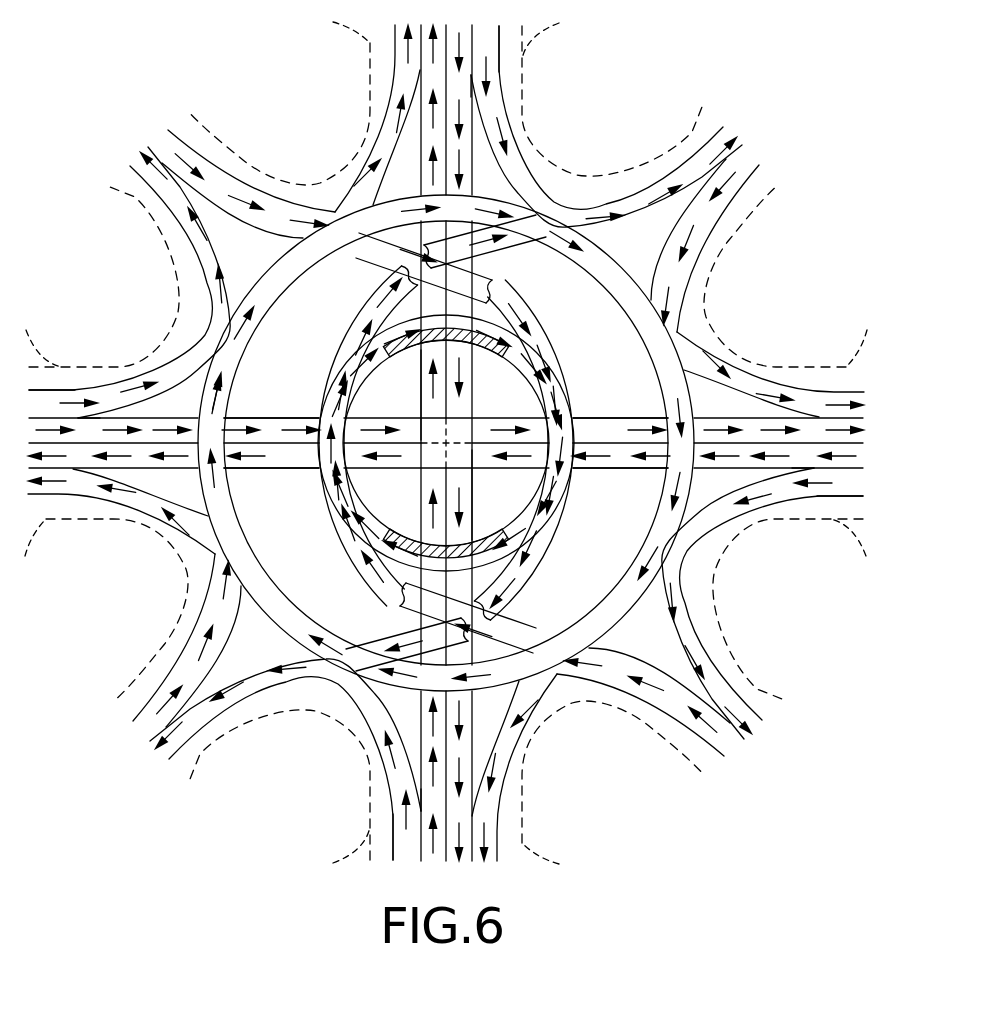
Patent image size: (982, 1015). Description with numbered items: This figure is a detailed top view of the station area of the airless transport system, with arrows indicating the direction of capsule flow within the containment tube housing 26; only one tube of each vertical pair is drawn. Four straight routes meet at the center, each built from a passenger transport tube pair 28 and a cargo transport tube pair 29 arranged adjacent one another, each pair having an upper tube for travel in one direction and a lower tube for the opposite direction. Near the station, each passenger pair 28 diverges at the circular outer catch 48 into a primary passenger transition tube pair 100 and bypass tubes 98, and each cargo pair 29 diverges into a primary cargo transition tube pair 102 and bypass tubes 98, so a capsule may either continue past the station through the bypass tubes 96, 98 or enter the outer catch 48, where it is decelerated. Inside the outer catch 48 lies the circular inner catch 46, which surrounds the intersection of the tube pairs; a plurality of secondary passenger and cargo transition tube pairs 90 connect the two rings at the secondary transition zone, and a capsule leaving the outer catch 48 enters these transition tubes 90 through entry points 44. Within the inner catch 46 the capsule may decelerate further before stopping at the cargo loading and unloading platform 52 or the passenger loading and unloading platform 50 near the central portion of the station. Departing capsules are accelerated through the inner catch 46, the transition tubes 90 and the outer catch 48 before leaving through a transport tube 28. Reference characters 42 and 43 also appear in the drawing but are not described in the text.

The containment tube housing 26 is at (445, 442).
The passenger transport tube pair 28 is at (128, 192).
The cargo transport tube pair 29 is at (190, 128).
The exit ramp 42 is at (200, 260).
The entrance ramp 43 is at (265, 198).
The entry point 44 is at (527, 235).
The circular inner catch 46 is at (566, 492).
The circular outer catch 48 is at (228, 393).
The passenger loading and unloading platform 50 is at (405, 528).
The cargo loading and unloading platform 52 is at (497, 357).
The secondary passenger and cargo transition tube pair 90 is at (383, 300).
The bypass tube 96 is at (640, 410).
The bypass tube pair 98 is at (420, 380).
The primary passenger transition tube pair 100 is at (395, 62).
The primary cargo transition tube pair 102 is at (73, 390).